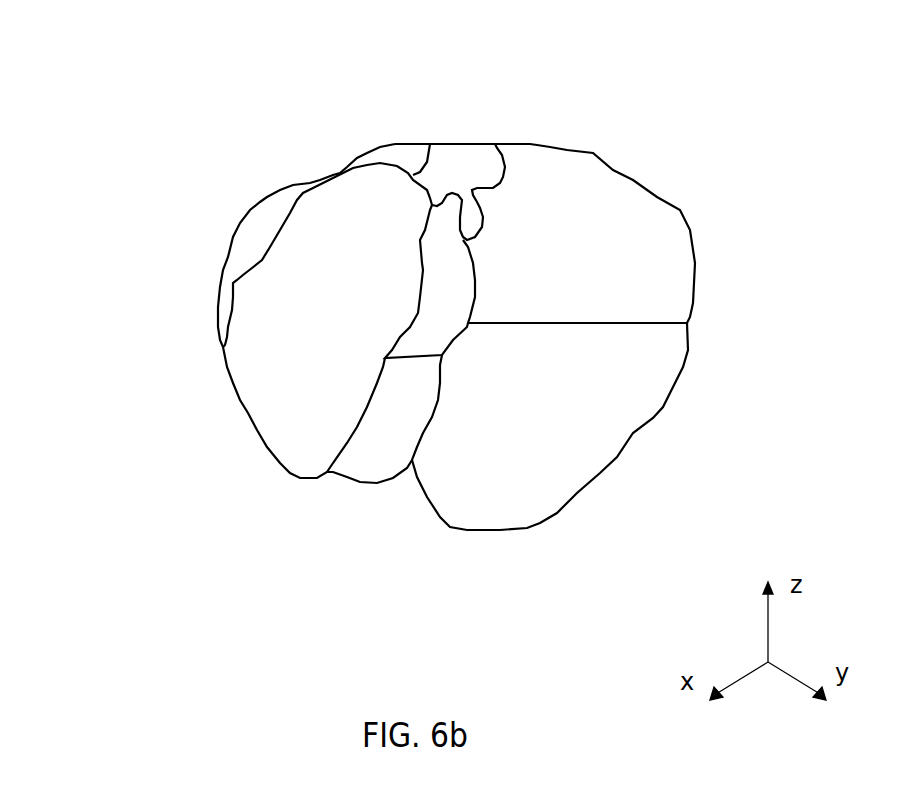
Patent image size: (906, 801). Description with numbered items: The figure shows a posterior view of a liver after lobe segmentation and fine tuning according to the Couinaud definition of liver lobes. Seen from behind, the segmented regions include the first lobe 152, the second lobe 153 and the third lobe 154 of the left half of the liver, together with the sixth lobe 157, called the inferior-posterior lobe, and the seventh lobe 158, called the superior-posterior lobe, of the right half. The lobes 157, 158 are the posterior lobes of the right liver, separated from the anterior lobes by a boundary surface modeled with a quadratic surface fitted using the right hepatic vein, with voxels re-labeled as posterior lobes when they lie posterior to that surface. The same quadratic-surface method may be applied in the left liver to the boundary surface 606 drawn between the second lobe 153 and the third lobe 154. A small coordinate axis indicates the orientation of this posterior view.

The lobe 1 152 is at (434, 296).
The lobe 2 153 is at (267, 398).
The lobe 3 154 is at (247, 257).
The lobe 6 157 is at (557, 398).
The lobe 7 158 is at (580, 195).
The boundary surface between lobes 2 and 3 606 is at (237, 280).